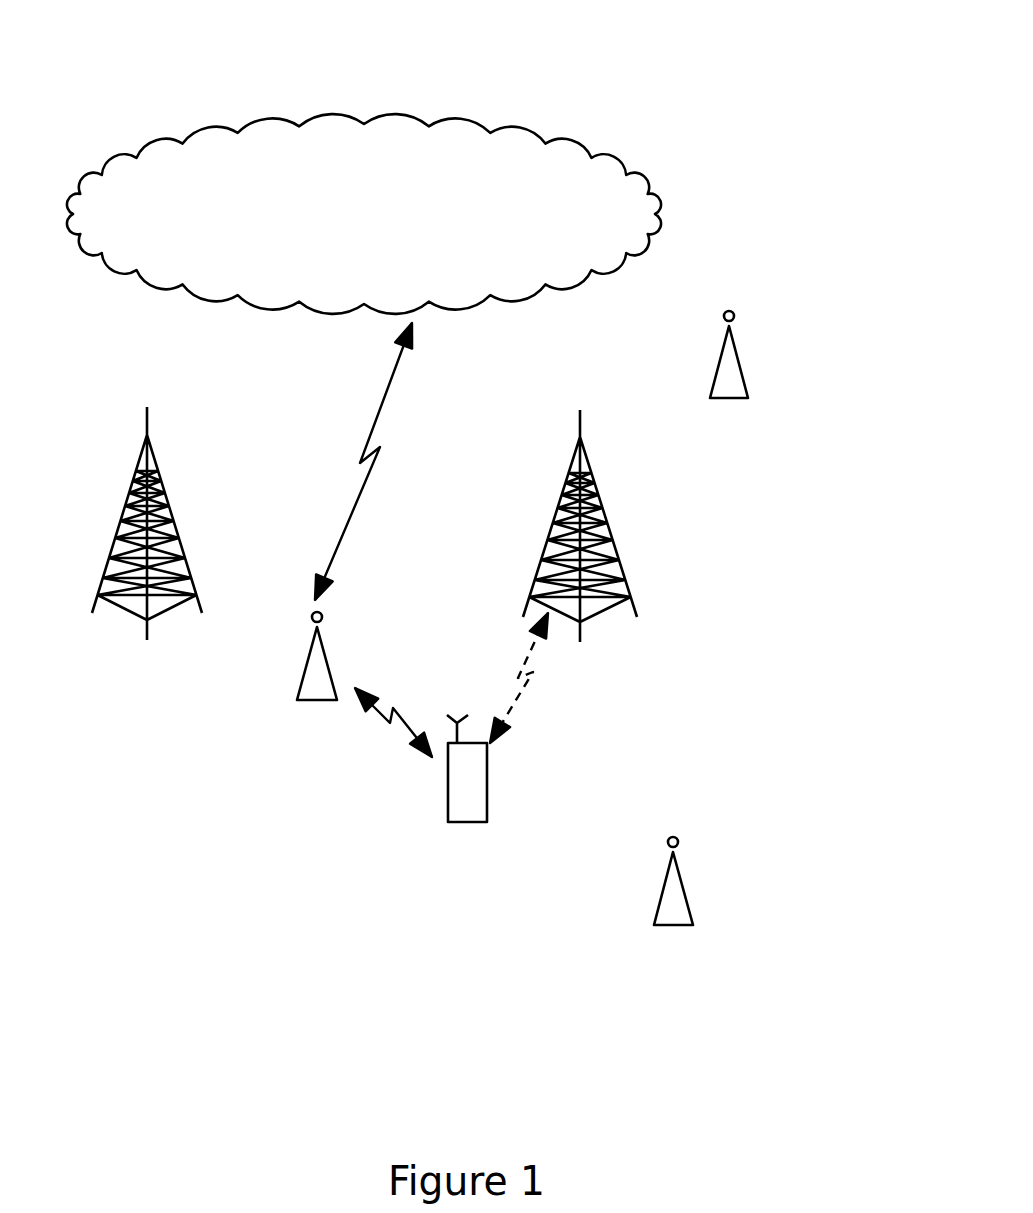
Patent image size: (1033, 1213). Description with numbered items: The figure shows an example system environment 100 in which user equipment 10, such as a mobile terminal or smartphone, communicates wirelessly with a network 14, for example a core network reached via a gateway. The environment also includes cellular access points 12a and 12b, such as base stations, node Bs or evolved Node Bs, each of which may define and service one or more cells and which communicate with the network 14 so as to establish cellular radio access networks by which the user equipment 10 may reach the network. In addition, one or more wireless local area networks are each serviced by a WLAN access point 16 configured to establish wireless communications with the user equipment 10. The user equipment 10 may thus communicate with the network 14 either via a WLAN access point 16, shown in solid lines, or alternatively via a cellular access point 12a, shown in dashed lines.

The system environment 100 is at (570, 55).
The network 14 is at (580, 142).
The access point 12a is at (605, 533).
The access point 12b is at (165, 518).
The WLAN access point 16 is at (742, 362).
The user equipment 10 is at (487, 795).